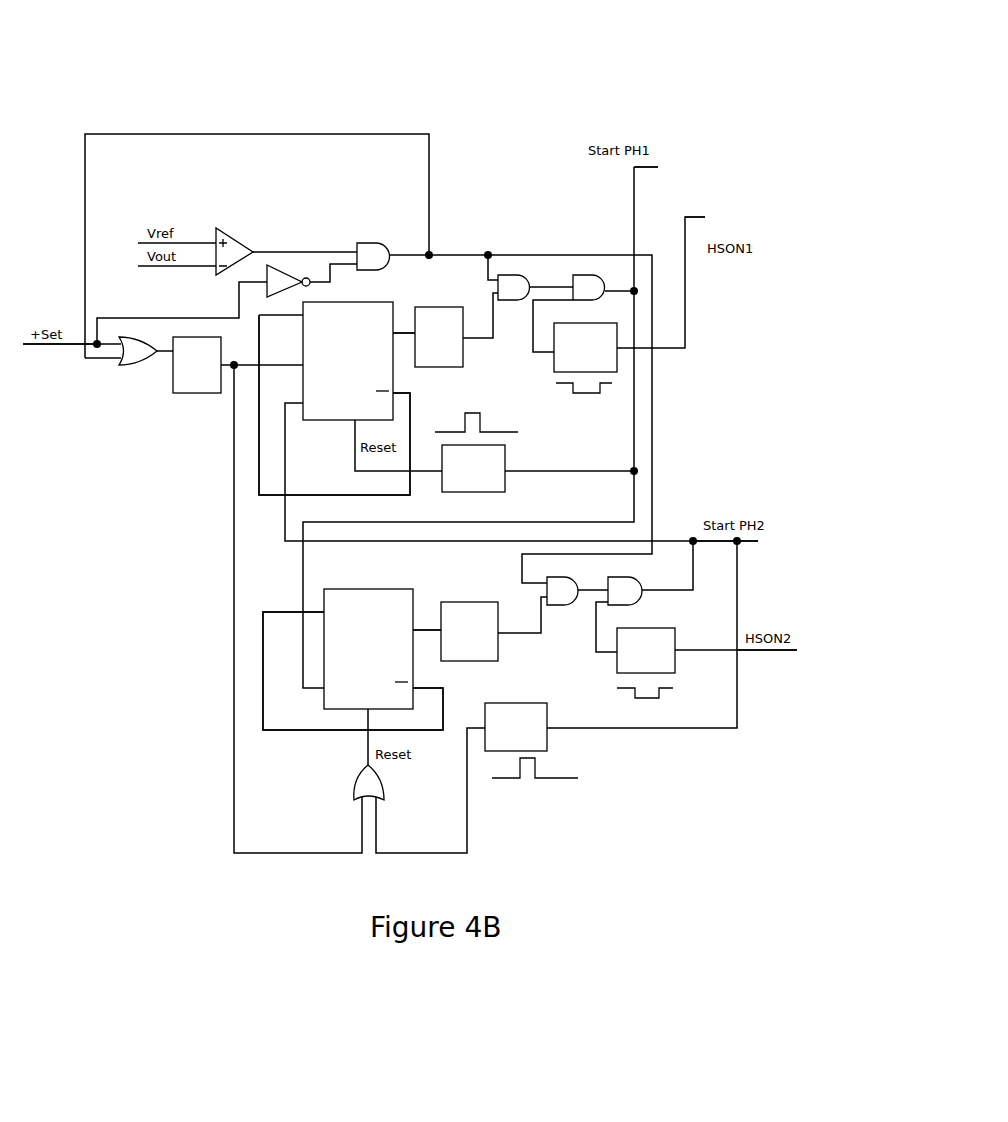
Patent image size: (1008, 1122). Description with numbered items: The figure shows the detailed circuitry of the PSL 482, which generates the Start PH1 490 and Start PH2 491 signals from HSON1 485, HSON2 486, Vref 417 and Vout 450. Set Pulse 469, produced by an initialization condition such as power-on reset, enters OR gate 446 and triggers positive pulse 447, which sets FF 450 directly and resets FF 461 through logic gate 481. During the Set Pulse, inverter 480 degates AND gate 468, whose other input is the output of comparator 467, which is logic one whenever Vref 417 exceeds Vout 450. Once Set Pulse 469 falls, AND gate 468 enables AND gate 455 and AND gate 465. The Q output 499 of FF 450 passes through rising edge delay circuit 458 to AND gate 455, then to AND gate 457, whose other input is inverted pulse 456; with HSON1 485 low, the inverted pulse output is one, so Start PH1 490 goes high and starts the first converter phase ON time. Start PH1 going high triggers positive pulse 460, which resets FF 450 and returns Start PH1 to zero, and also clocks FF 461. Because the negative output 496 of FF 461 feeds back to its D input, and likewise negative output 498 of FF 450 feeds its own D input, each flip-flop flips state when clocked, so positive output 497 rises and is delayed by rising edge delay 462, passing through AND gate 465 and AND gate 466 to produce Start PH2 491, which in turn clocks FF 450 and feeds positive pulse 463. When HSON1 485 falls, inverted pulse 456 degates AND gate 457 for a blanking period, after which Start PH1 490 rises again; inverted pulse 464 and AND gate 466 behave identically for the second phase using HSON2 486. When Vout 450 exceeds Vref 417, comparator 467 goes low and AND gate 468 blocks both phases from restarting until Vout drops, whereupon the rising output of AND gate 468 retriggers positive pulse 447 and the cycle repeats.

The PSL 482 is at (417, 80).
The Vref 417 is at (158, 221).
The comparator 467 is at (233, 230).
The FF 450 is at (182, 267).
The inverter 480 is at (277, 265).
The AND gate 468 is at (366, 243).
The Set Pulse 469 is at (65, 346).
The OR gate 446 is at (128, 367).
The positive pulse 447 is at (185, 394).
The Q output 499 is at (404, 333).
The rising edge delay circuit 458 is at (437, 367).
The AND gate 455 is at (517, 275).
The AND gate 457 is at (582, 275).
The inverted pulse 456 is at (553, 353).
The positive pulse 460 is at (507, 462).
The negative output of FF 450 498 is at (412, 497).
The Start PH1 490 is at (657, 165).
The HSON1 485 is at (723, 238).
The Start PH2 491 is at (732, 513).
The FF 461 is at (383, 588).
The positive output 497 is at (427, 600).
The rising edge delay 462 is at (475, 600).
The AND gate 465 is at (562, 603).
The AND gate 466 is at (643, 598).
The inverted pulse 464 is at (675, 667).
The HSON2 486 is at (763, 625).
The positive pulse 463 is at (548, 742).
The logic gate 481 is at (353, 790).
The negative output 496 is at (422, 732).